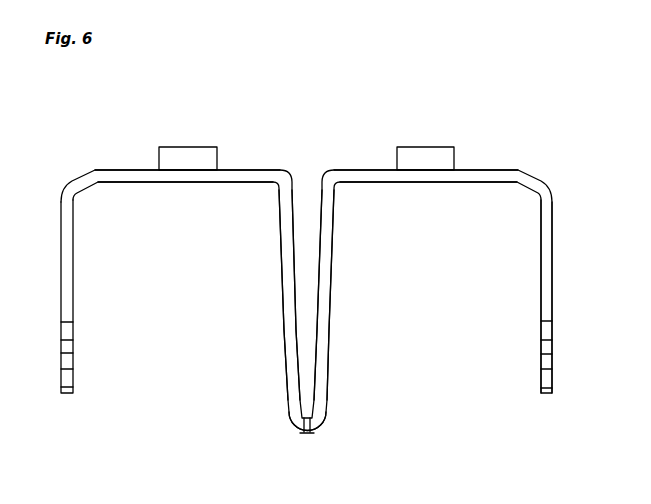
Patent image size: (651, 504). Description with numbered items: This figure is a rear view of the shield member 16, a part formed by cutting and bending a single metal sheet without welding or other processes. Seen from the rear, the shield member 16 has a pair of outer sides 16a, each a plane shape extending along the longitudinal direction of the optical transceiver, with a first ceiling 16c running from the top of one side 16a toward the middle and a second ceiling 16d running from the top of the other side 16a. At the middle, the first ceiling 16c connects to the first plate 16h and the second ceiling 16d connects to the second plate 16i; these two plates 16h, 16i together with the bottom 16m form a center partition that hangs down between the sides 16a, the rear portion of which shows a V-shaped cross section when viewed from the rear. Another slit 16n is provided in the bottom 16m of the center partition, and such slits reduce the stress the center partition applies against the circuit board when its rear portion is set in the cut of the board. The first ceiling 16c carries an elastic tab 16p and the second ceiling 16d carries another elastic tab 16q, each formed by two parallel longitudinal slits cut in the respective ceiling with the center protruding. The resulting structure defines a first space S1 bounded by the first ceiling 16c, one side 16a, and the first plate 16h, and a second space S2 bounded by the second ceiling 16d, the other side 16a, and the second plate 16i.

The shield member 16 is at (443, 68).
The side 16a is at (66, 276).
The first ceiling 16c is at (494, 168).
The second ceiling 16d is at (251, 168).
The first plate 16h is at (323, 342).
The second plate 16i is at (289, 333).
The bottom 16m is at (316, 425).
The slit 16n is at (307, 442).
The elastic tab 16p is at (421, 156).
The elastic tab 16q is at (187, 156).
The first space S1 is at (452, 344).
The second space S2 is at (170, 344).